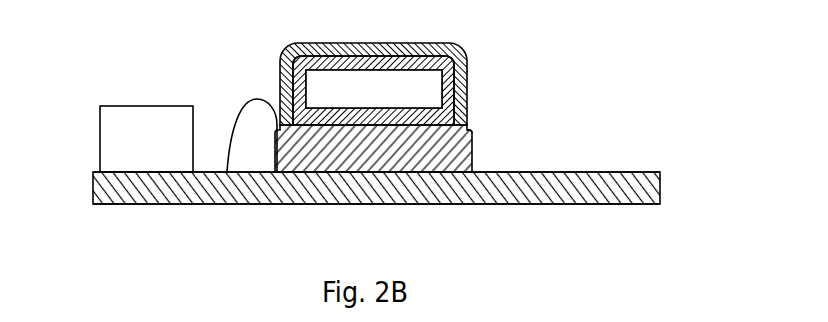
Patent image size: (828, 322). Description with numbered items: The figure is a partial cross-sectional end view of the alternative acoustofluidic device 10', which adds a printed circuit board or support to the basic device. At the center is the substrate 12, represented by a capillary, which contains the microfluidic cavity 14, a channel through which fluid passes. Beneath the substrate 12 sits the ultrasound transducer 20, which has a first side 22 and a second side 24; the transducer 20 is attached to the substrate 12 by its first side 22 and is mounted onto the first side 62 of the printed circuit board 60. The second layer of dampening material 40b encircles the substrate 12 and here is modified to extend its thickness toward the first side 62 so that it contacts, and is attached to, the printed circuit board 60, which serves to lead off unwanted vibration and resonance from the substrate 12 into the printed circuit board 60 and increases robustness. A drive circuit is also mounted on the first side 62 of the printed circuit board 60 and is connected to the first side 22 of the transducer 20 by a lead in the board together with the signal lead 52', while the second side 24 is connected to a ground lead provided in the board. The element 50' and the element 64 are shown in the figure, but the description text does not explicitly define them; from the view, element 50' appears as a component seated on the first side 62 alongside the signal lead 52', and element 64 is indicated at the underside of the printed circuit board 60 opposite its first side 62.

The alternative acoustofluidic device 10' is at (197, 21).
The substrate 12 is at (307, 47).
The microfluidic cavity 14 is at (425, 89).
The ultrasound transducer 20 is at (473, 147).
The first side 22 is at (468, 132).
The second side 24 is at (474, 177).
The second layer of dampening material 40b is at (423, 40).
The electronic component 50' is at (118, 105).
The signal lead 52' is at (228, 120).
The printed circuit board 60 is at (661, 192).
The first side 62 is at (575, 172).
The bottom surface of circuit board 64 is at (583, 206).